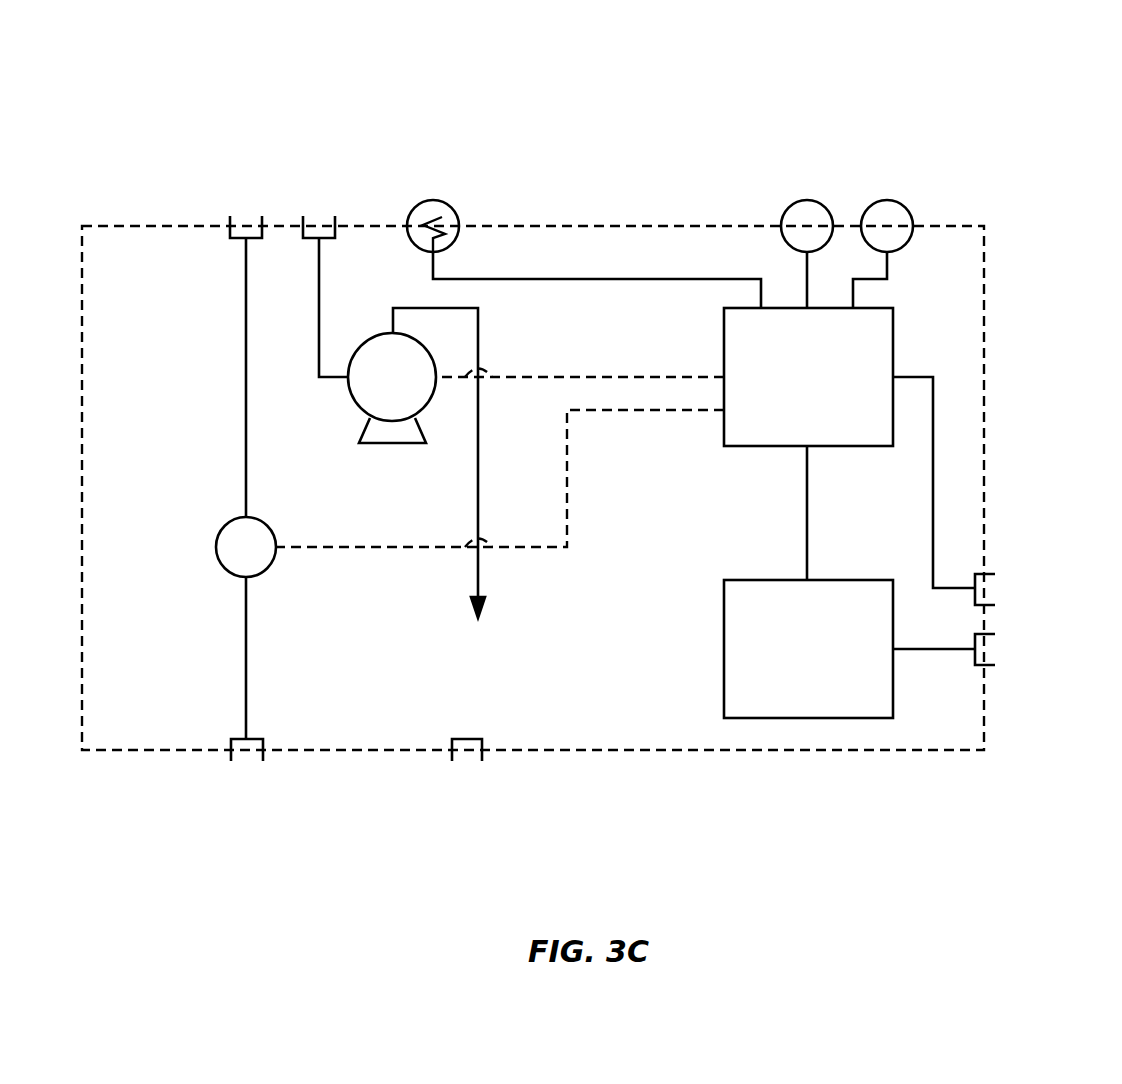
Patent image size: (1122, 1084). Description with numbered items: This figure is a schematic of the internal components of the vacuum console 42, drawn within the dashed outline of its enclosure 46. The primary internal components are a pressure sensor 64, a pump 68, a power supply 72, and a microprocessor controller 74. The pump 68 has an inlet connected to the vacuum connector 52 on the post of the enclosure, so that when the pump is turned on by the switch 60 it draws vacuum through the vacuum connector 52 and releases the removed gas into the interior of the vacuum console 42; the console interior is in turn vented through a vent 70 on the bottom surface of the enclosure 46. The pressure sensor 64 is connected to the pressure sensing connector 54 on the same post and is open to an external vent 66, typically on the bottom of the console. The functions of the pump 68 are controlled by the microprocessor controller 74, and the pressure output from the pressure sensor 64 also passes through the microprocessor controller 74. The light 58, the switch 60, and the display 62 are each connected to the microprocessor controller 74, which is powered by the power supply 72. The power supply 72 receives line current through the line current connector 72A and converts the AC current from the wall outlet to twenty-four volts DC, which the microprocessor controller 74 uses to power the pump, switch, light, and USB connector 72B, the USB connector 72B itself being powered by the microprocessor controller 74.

The vacuum console 42 is at (963, 92).
The enclosure 46 is at (985, 452).
The vacuum connector 52 is at (318, 212).
The pressure sensing connector 54 is at (250, 223).
The light 58 is at (437, 204).
The switch 60 is at (800, 202).
The display 62 is at (889, 200).
The pressure sensor 64 is at (221, 567).
The external vent 66 is at (243, 758).
The pump 68 is at (365, 395).
The vent 70 is at (466, 757).
The power supply 72 is at (849, 649).
The line current connector 72A is at (992, 648).
The USB connector 72B is at (992, 587).
The microprocessor controller 74 is at (625, 448).